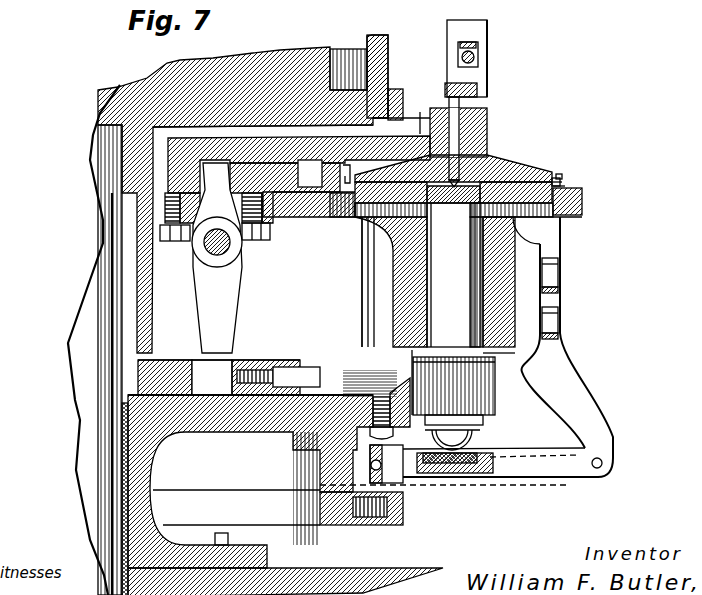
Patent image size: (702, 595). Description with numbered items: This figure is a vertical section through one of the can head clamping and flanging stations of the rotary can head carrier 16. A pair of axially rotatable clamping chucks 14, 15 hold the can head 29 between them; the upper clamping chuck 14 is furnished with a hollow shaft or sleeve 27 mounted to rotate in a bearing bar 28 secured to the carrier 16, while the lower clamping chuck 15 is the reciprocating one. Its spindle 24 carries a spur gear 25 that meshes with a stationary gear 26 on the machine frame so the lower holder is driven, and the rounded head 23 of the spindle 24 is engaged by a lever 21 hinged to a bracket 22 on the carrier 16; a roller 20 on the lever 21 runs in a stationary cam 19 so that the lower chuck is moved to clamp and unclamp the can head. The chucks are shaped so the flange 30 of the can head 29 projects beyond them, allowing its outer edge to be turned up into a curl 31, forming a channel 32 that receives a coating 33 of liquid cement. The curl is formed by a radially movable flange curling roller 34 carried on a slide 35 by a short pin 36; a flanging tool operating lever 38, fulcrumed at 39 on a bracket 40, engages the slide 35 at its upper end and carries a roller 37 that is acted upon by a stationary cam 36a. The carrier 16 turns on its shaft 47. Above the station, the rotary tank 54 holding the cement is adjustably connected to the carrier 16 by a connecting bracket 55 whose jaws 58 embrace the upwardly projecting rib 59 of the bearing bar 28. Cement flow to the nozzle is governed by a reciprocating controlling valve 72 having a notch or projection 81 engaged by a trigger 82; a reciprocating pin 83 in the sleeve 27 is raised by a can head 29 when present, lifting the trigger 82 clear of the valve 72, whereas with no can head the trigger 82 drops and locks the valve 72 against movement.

The upper clamping chuck 14 is at (535, 165).
The lower clamping chuck 15 is at (578, 190).
The can head carrier 16 is at (583, 214).
The stationary cam 19 is at (404, 520).
The roller 20 is at (404, 485).
The lever 21 is at (522, 473).
The bracket 22 is at (587, 410).
The rounded head of spindle 23 is at (478, 442).
The spindle 24 is at (453, 266).
The spur gear 25 is at (496, 400).
The stationary gear 26 is at (262, 432).
The hollow shaft or sleeve 27 is at (482, 110).
The bearing bar 28 is at (330, 140).
The can head 29 is at (560, 178).
The flange 30 is at (566, 185).
The curl 31 is at (563, 180).
The channel 32 is at (565, 169).
The coating 33 is at (351, 168).
The flange curling roller 34 is at (325, 225).
The radially movable slide 35 is at (270, 228).
The short shaft or pin 36 is at (260, 191).
The stationary cam 36a is at (162, 358).
The roller 37 is at (250, 377).
The flanging tool operating lever 38 is at (217, 258).
The fulcrum 39 is at (212, 244).
The bracket 40 is at (260, 241).
The shaft of the carrier 47 is at (68, 345).
The rotary tank 54 is at (378, 36).
The connecting bracket 55 is at (396, 89).
The jaws 58 is at (401, 118).
The upwardly projecting rib 59 is at (395, 138).
The controlling valve 72 is at (476, 60).
The notch or projection 81 is at (480, 47).
The trigger 82 is at (458, 60).
The reciprocating pin 83 is at (445, 96).